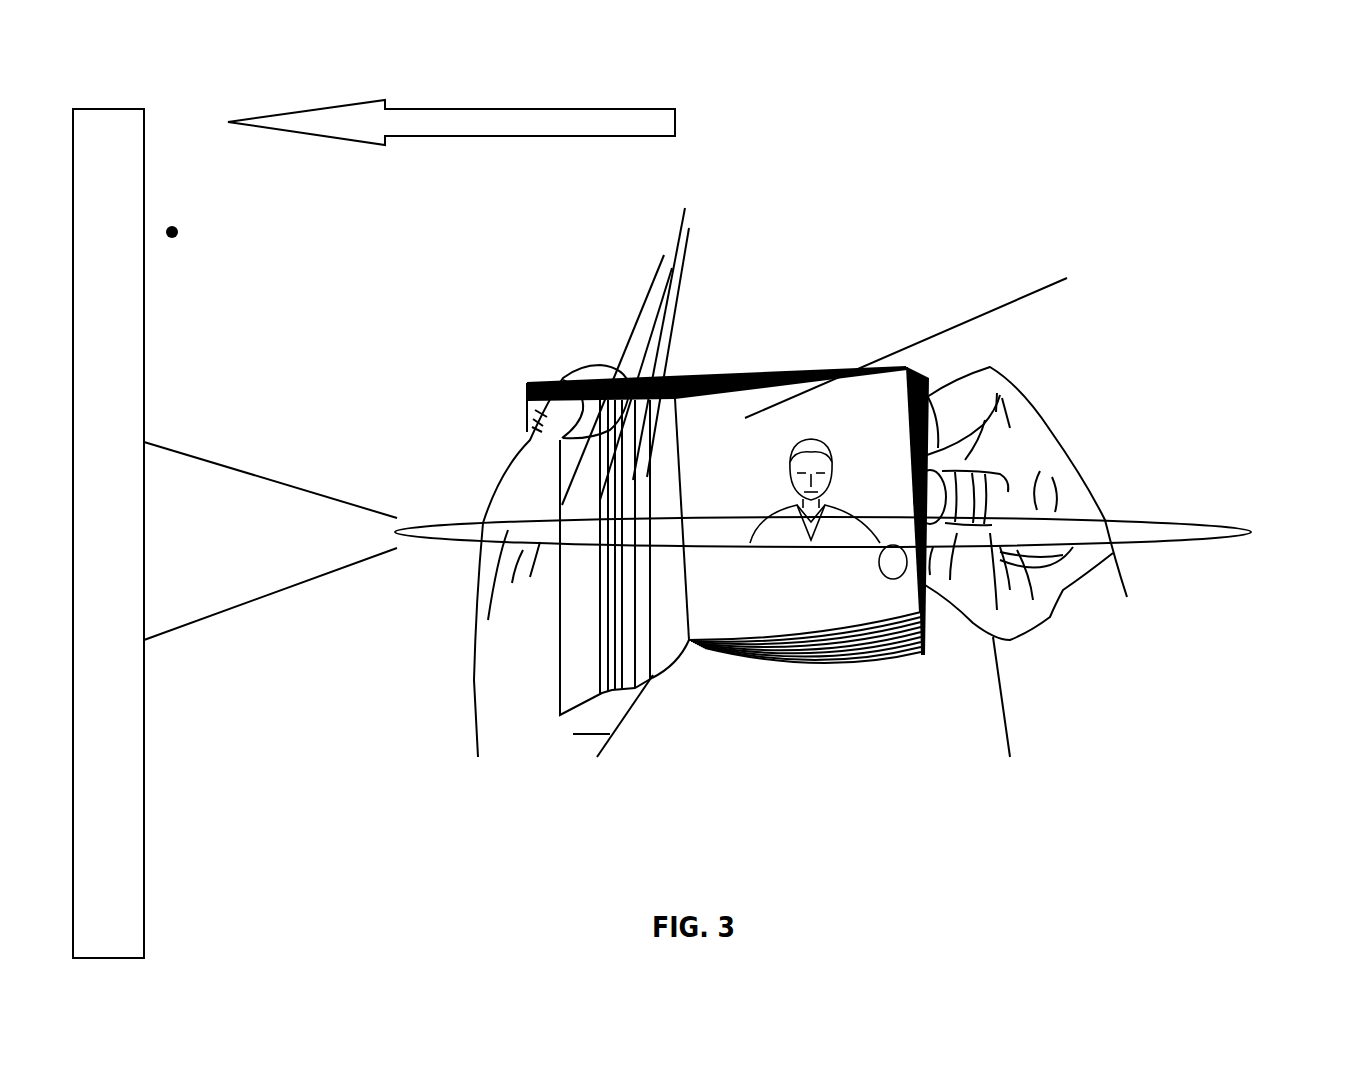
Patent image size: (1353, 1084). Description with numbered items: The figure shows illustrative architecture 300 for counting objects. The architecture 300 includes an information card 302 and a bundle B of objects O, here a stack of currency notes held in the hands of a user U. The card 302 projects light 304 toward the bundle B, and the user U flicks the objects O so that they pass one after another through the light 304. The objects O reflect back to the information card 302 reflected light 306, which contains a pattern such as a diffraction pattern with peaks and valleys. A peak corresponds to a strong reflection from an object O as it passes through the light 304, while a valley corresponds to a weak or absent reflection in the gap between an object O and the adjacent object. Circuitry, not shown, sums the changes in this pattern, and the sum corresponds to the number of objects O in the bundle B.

The architecture 300 is at (1200, 76).
The information card 302 is at (144, 777).
The light 304 is at (302, 588).
The reflected light 306 is at (615, 108).
The bundle B is at (772, 382).
The objects O is at (672, 663).
The user U is at (1068, 460).